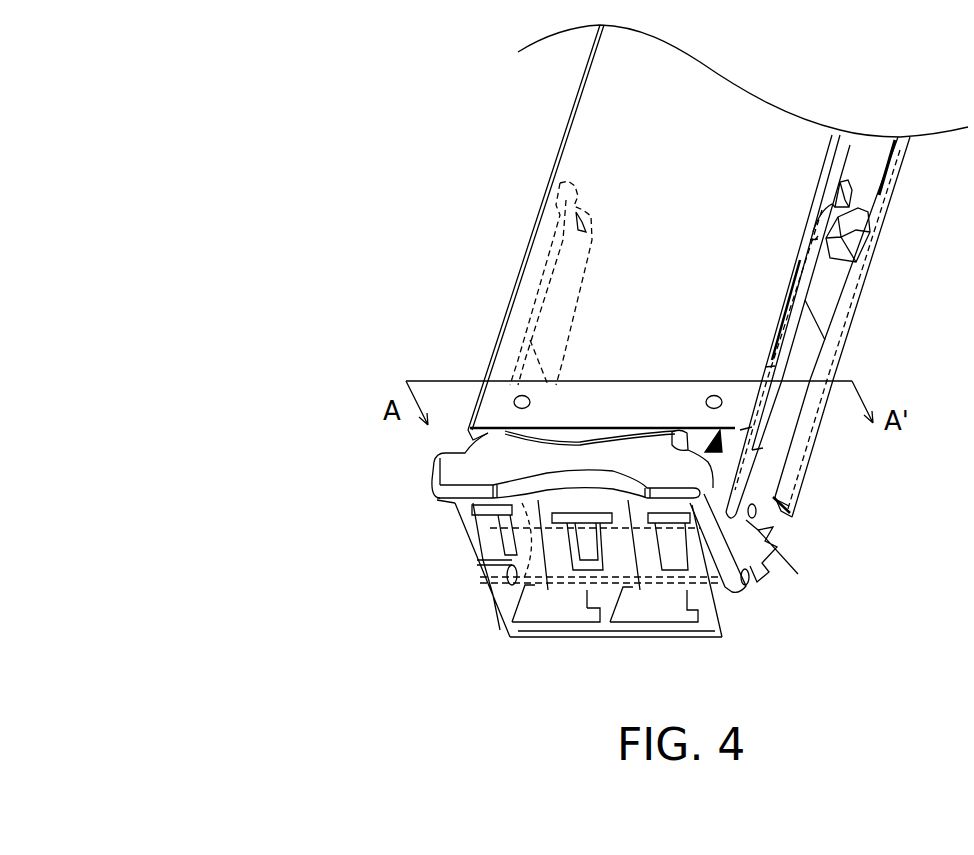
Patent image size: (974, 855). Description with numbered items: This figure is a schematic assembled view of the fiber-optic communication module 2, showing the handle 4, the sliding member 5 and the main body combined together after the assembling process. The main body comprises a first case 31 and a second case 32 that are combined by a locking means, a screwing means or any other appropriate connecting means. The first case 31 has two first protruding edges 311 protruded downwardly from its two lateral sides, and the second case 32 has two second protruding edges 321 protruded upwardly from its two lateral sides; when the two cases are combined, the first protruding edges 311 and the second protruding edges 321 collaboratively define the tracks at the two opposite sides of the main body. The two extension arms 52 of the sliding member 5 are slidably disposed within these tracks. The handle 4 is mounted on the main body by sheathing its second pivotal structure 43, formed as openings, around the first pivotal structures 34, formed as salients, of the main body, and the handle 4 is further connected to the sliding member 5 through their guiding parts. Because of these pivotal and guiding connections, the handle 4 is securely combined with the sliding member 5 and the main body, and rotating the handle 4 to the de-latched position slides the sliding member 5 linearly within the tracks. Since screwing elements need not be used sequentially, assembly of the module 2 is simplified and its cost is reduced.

The fiber-optic communication module 2 is at (195, 142).
The first case 31 is at (600, 150).
The first protruding edges 311 is at (788, 338).
The second case 32 is at (890, 211).
The second protruding edges 321 is at (785, 512).
The handle 4 is at (490, 462).
The first pivotal structures 34 is at (512, 578).
The second pivotal structure 43 is at (748, 590).
The sliding member 5 is at (773, 560).
The extension arms 52 is at (790, 425).